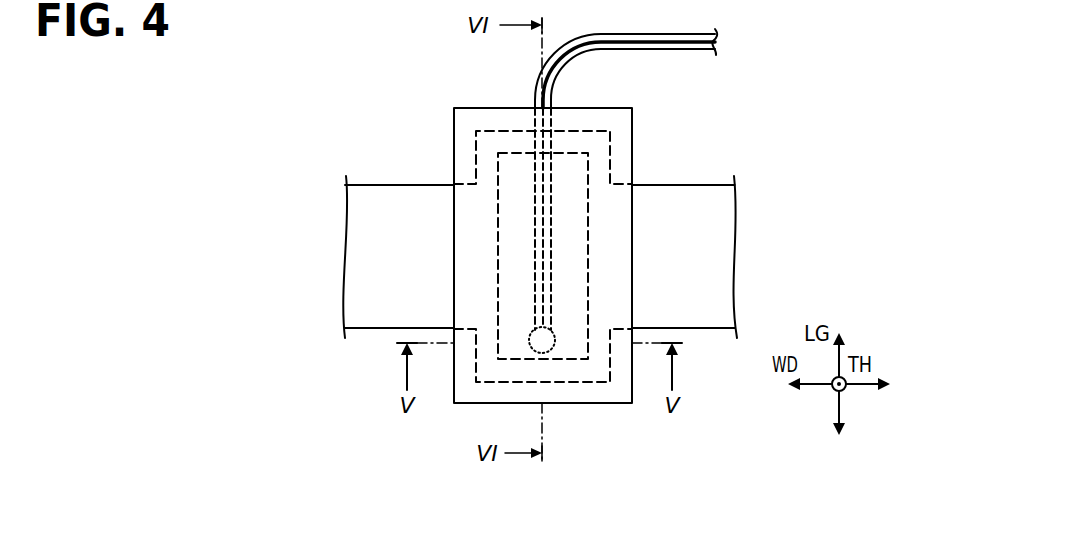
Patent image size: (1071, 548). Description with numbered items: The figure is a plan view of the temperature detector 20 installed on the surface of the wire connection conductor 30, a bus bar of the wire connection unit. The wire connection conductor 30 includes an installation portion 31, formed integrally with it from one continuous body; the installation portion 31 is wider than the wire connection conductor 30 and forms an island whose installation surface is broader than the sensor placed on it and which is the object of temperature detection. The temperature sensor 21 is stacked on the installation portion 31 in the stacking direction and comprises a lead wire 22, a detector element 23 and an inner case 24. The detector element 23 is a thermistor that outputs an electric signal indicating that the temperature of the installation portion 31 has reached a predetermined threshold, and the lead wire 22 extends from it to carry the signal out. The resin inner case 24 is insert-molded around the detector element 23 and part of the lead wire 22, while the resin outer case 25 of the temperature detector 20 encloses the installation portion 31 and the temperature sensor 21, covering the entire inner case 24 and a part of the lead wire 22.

The temperature detector 20 is at (443, 104).
The temperature sensor 21 is at (489, 254).
The lead wire 22 is at (600, 50).
The detector element 23 is at (551, 352).
The inner case 24 is at (590, 360).
The outer case 25 is at (454, 150).
The wire connection conductor 30 is at (688, 184).
The installation portion 31 is at (612, 153).